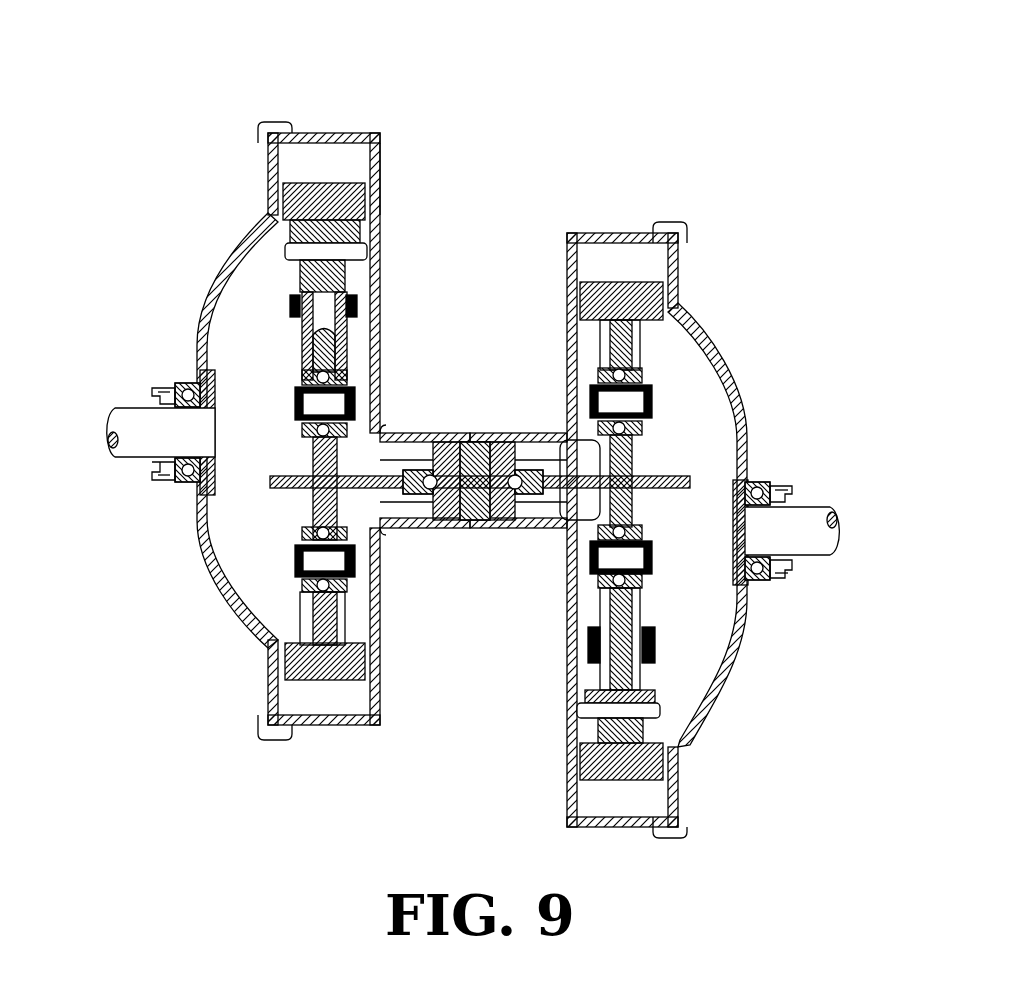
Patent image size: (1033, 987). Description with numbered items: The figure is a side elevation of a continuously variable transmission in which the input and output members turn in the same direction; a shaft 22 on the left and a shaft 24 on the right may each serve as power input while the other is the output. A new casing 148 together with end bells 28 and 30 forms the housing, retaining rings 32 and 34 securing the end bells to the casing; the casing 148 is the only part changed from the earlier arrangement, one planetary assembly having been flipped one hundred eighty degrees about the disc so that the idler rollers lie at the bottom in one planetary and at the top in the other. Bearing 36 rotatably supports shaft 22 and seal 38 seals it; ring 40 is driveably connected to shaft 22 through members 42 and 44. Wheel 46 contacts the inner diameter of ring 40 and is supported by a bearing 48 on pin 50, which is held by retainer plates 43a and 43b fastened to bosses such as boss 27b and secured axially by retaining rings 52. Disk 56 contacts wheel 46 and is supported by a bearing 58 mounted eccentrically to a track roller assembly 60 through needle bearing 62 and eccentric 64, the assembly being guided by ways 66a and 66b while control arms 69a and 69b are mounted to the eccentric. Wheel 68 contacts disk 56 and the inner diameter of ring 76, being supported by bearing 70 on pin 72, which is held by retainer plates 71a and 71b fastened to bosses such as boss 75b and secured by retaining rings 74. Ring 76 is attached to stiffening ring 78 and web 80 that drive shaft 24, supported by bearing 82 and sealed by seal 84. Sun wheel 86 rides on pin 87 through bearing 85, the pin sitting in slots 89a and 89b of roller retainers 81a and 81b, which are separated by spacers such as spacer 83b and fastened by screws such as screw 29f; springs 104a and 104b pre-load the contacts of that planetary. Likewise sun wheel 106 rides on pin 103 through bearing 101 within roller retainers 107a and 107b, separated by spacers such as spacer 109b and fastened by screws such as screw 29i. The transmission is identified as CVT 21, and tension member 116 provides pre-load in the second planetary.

The housing assembly 21 is at (383, 138).
The shaft 22 is at (112, 405).
The shaft 24 is at (815, 556).
The boss 27b is at (372, 595).
The end bell 28 is at (268, 168).
The screw 29f is at (310, 243).
The screw 29i is at (570, 738).
The end bell 30 is at (677, 792).
The retaining ring 32 is at (262, 134).
The retaining ring 34 is at (680, 826).
The bearing 36 is at (187, 480).
The seal 38 is at (168, 470).
The ring 40 is at (262, 724).
The member 42 is at (300, 607).
The retainer plate 43a is at (215, 522).
The retainer plate 43b is at (443, 677).
The member 44 is at (348, 693).
The wheel 46 is at (268, 592).
The bearing 48 is at (262, 598).
The pin 50 is at (300, 560).
The retaining rings 52 is at (298, 577).
The disk 56 is at (398, 432).
The bearing 58 is at (446, 440).
The track roller assembly 60 is at (515, 526).
The needle bearing 62 is at (447, 522).
The eccentric 64 is at (477, 527).
The way 66a is at (552, 447).
The way 66b is at (385, 430).
The wheel 68 is at (625, 352).
The control arm 69a is at (507, 498).
The control arm 69b is at (432, 496).
The bearing 70 is at (640, 380).
The retainer plate 71a is at (640, 428).
The retainer plate 71b is at (586, 322).
The pin 72 is at (640, 413).
The retaining rings 74 is at (640, 427).
The boss 75b is at (585, 385).
The ring 76 is at (592, 312).
The stiffening ring 78 is at (566, 241).
The web 80 is at (655, 615).
The roller retainer 81a is at (297, 256).
The roller retainer 81b is at (295, 187).
The bearing 82 is at (770, 584).
The spacer 83b is at (292, 216).
The seal 84 is at (790, 585).
The bearing 85 is at (296, 306).
The sun wheel 86 is at (316, 348).
The pin 87 is at (312, 395).
The slot 89a is at (320, 405).
The slot 89b is at (378, 386).
The bearing 101 is at (655, 580).
The pin 103 is at (722, 603).
The spring 104a is at (292, 268).
The spring 104b is at (360, 290).
The sun wheel 106 is at (656, 640).
The roller retainer 107a is at (644, 775).
The roller retainer 107b is at (580, 705).
The spacer 109b is at (585, 800).
The nut 116 is at (590, 680).
The casing 148 is at (362, 690).